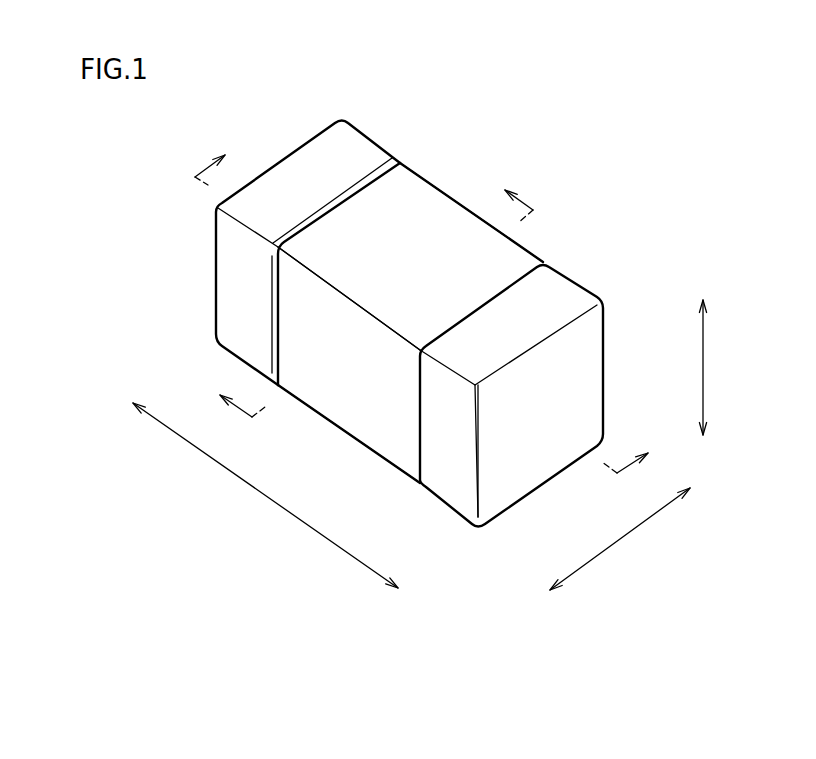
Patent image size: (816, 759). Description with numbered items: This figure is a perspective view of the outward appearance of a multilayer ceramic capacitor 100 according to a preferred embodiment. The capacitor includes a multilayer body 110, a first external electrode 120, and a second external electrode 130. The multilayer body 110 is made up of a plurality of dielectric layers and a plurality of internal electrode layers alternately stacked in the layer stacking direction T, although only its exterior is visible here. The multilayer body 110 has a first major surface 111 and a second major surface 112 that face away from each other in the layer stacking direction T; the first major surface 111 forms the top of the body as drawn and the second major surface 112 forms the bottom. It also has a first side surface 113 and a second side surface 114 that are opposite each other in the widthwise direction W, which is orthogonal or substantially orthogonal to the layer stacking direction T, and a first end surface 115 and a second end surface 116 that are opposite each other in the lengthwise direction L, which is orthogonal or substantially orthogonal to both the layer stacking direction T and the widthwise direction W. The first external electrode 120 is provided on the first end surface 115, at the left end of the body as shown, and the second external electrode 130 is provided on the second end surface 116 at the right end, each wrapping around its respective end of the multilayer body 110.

The multilayer ceramic capacitor 100 is at (635, 180).
The multilayer body 110 is at (403, 190).
The first major surface 111 is at (427, 218).
The second major surface 112 is at (392, 420).
The first side surface 113 is at (350, 393).
The second side surface 114 is at (497, 265).
The first end surface 115 is at (245, 293).
The second end surface 116 is at (538, 450).
The first external electrode 120 is at (350, 150).
The second external electrode 130 is at (555, 302).